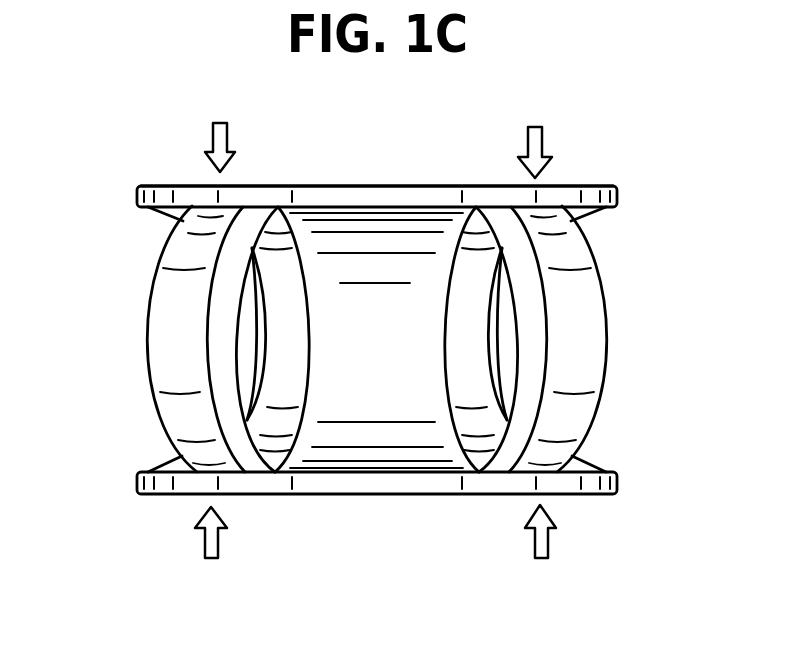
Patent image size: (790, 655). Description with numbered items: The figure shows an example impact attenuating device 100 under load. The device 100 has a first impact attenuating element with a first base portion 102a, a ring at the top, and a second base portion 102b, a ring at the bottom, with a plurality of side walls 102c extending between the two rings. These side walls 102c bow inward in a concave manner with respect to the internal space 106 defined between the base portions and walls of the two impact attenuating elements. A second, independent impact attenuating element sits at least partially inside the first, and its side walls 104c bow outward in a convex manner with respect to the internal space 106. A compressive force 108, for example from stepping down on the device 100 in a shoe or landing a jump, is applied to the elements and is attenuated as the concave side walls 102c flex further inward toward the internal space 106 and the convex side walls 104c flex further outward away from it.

The impact attenuating device 100 is at (422, 158).
The first base portion 102a is at (548, 205).
The second base portion 102b is at (493, 484).
The side walls 102c is at (468, 292).
The side walls 104c is at (175, 335).
The internal space 106 is at (367, 186).
The compressive force 108 is at (213, 130).